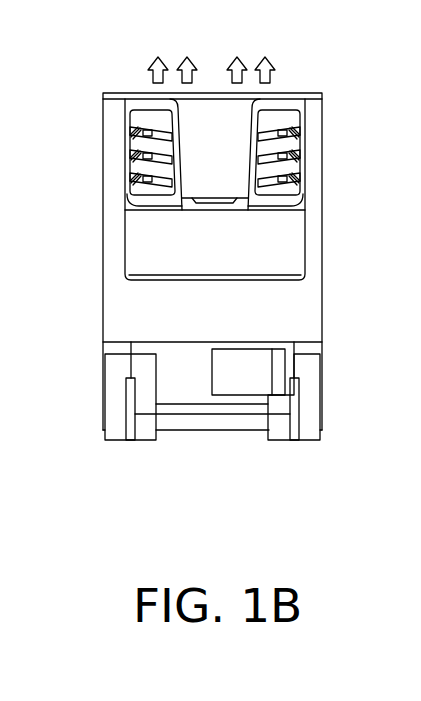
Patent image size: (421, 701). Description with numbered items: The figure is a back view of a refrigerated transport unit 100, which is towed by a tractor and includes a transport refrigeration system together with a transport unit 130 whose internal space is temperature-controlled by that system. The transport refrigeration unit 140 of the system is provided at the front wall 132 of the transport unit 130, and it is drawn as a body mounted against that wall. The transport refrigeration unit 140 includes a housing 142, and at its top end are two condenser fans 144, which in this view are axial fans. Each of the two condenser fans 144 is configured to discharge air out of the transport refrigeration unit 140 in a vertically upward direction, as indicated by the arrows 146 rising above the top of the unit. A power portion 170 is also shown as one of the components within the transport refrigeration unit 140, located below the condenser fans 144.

The refrigerated transport unit 100 is at (212, 45).
The transport unit 130 is at (293, 313).
The front wall 132 is at (123, 298).
The transport refrigeration unit 140 is at (123, 222).
The housing 142 is at (293, 217).
The condenser fans 144 is at (142, 98).
The arrows 146 is at (156, 62).
The power portion 170 is at (268, 243).